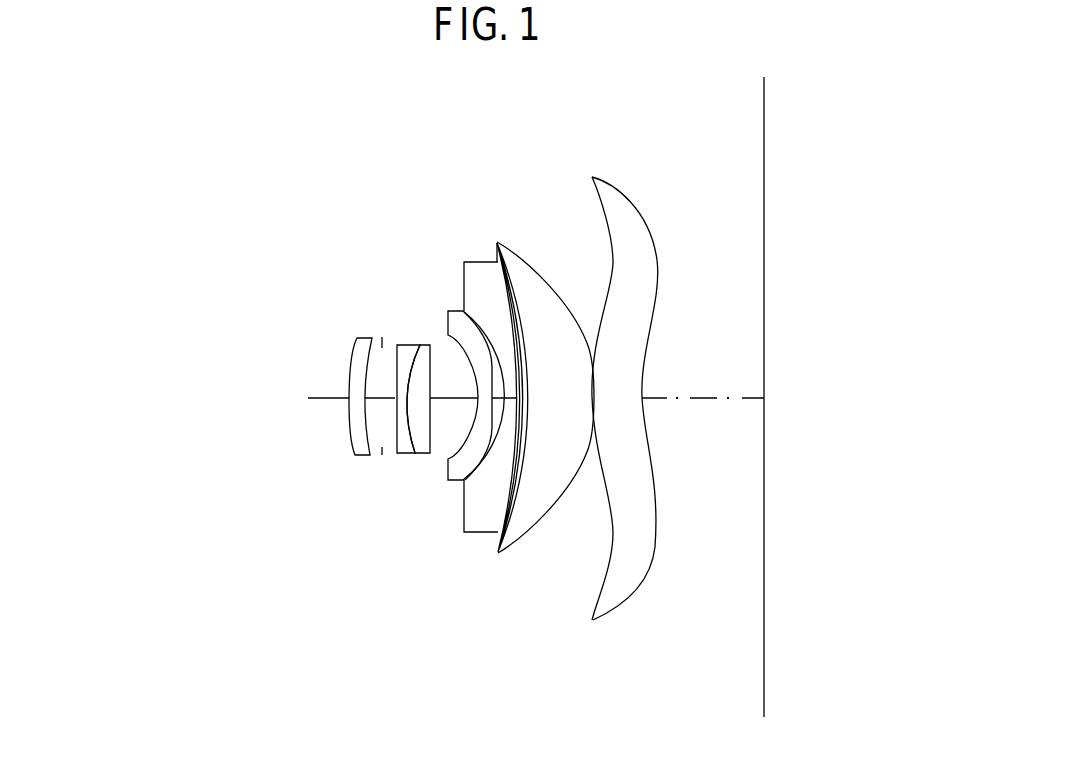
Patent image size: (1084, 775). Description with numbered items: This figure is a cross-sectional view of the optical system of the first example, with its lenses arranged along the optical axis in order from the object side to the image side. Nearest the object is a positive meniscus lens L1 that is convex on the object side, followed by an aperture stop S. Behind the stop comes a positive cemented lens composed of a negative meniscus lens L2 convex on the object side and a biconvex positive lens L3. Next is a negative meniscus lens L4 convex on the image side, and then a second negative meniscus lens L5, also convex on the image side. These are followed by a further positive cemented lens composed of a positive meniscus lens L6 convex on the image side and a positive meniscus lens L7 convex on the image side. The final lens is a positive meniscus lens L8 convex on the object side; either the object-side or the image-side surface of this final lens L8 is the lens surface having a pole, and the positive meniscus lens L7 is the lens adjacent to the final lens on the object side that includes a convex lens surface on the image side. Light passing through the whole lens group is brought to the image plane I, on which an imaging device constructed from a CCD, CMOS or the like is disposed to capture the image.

The positive meniscus lens L1 is at (357, 336).
The negative meniscus lens L2 is at (400, 345).
The biconvex positive lens L3 is at (420, 345).
The negative meniscus lens L4 is at (457, 311).
The negative meniscus lens L5 is at (480, 262).
The positive meniscus lens L6 is at (497, 243).
The positive meniscus lens L7 is at (529, 257).
The positive meniscus lens L8 is at (614, 188).
The aperture stop S is at (383, 452).
The image plane I is at (764, 703).